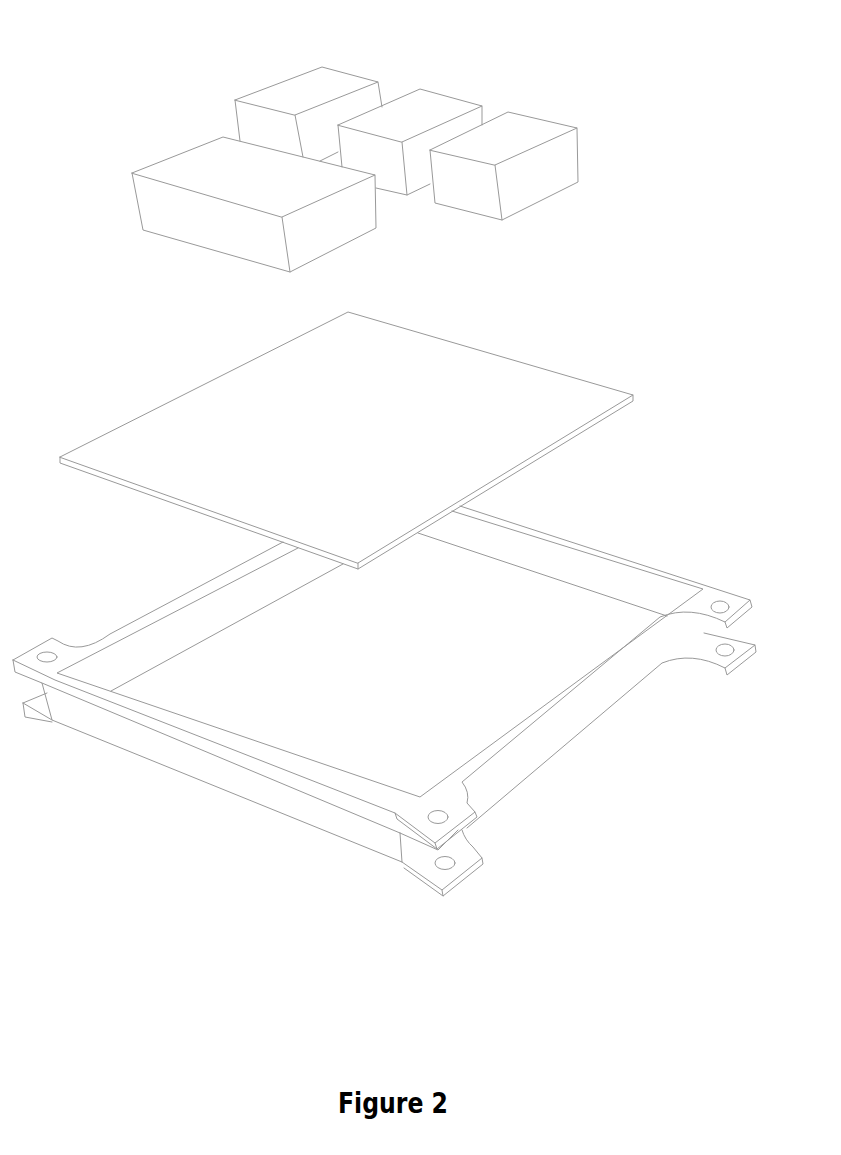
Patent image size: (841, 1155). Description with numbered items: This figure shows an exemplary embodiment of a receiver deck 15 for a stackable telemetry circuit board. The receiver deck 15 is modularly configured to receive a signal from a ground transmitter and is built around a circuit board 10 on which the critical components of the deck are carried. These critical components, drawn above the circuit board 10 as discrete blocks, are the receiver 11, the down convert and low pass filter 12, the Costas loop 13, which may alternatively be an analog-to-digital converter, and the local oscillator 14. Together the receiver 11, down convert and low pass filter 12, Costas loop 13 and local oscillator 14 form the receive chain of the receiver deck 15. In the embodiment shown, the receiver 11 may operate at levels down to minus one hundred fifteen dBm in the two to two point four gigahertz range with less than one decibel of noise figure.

The circuit board 10 is at (138, 447).
The receiver 11 is at (325, 82).
The down convert and low pass filter 12 is at (428, 108).
The Costas loop 13 is at (522, 135).
The local oscillator 14 is at (185, 167).
The receiver deck 15 is at (645, 593).